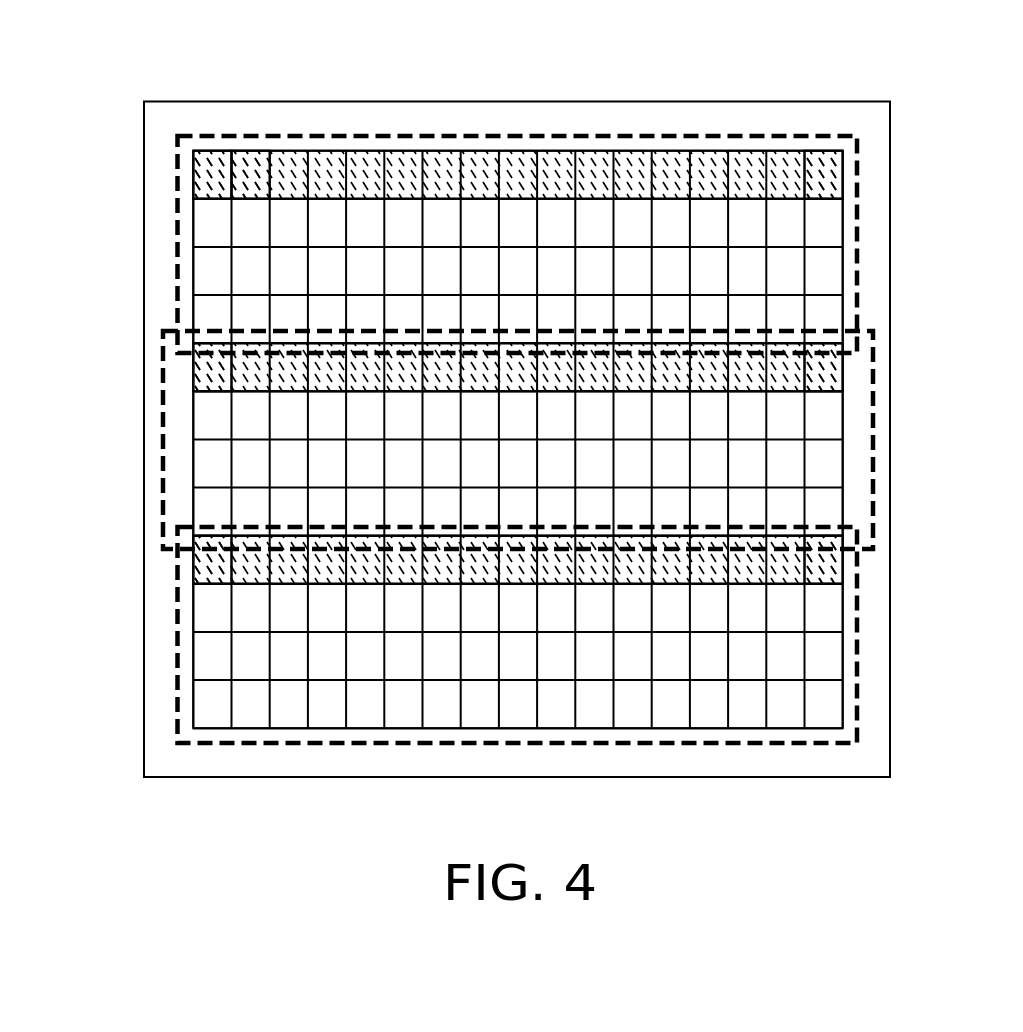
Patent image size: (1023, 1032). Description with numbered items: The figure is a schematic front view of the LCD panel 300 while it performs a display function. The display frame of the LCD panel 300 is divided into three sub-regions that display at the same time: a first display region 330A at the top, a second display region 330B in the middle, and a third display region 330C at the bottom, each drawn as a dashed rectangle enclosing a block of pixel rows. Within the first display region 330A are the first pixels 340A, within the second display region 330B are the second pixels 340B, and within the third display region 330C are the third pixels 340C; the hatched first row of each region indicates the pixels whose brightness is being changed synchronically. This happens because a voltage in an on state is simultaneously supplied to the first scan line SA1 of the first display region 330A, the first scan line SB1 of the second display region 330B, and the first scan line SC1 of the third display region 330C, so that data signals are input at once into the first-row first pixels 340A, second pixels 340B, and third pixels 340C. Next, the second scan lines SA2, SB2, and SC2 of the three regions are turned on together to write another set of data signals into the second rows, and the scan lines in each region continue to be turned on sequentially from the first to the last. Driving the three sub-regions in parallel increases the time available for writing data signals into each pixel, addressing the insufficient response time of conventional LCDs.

The LCD panel 300 is at (1005, 812).
The first display region 330A is at (857, 228).
The second display region 330B is at (873, 448).
The third display region 330C is at (857, 662).
The first pixels 340A is at (213, 173).
The second pixels 340B is at (205, 365).
The third pixels 340C is at (205, 565).
The first scan line of the first display region SA1 is at (200, 184).
The second scan line of the first display region SA2 is at (211, 247).
The first scan line of the second display region SB1 is at (200, 379).
The second scan line of the second display region SB2 is at (212, 438).
The first scan line of the third display region SC1 is at (200, 574).
The second scan line of the third display region SC2 is at (212, 632).